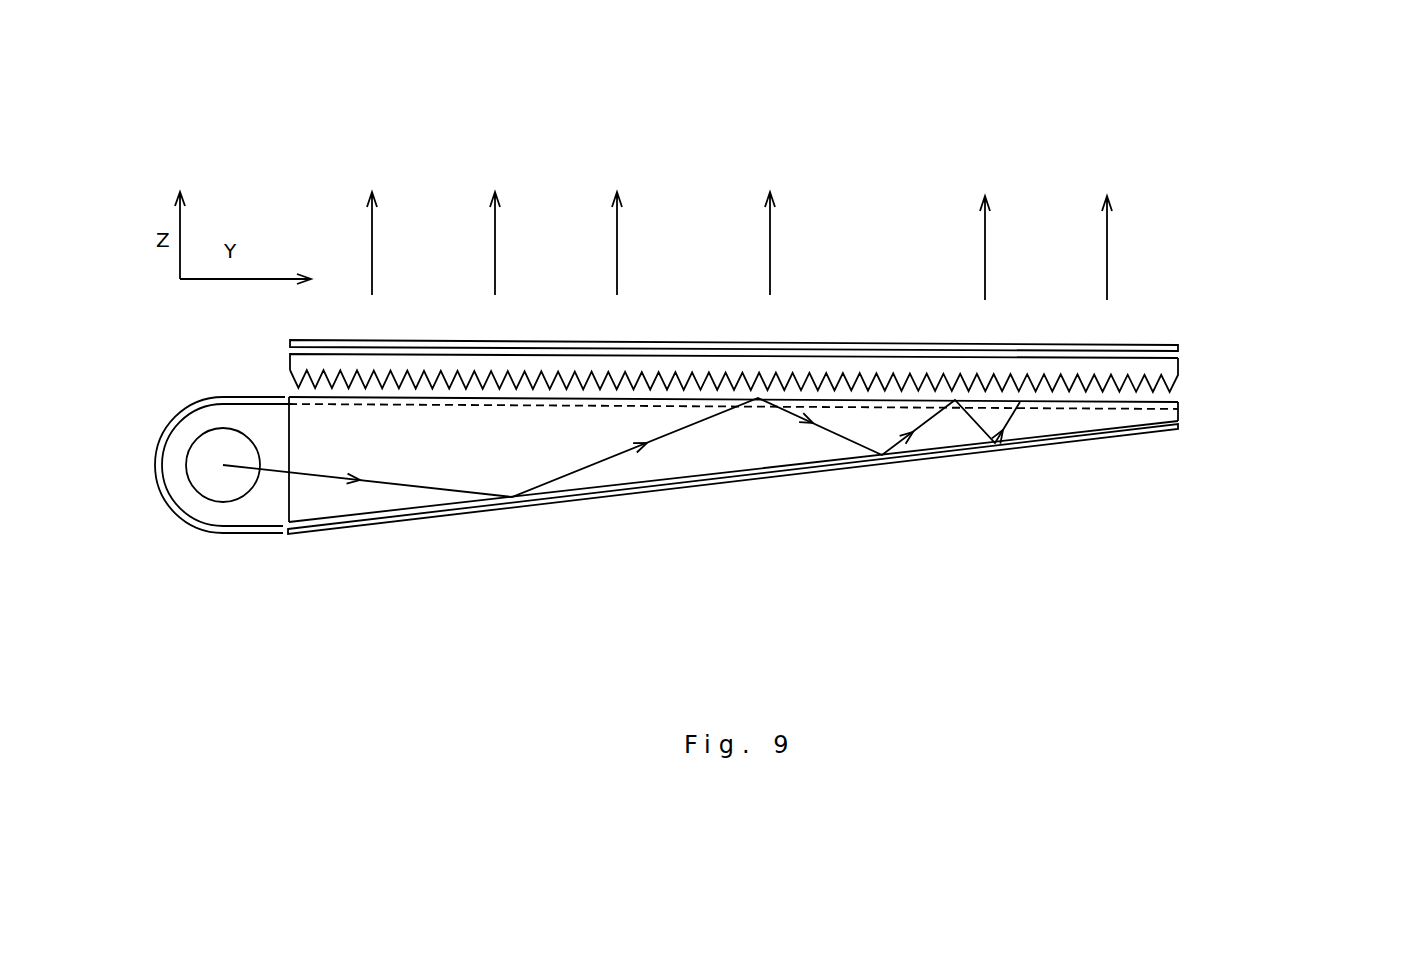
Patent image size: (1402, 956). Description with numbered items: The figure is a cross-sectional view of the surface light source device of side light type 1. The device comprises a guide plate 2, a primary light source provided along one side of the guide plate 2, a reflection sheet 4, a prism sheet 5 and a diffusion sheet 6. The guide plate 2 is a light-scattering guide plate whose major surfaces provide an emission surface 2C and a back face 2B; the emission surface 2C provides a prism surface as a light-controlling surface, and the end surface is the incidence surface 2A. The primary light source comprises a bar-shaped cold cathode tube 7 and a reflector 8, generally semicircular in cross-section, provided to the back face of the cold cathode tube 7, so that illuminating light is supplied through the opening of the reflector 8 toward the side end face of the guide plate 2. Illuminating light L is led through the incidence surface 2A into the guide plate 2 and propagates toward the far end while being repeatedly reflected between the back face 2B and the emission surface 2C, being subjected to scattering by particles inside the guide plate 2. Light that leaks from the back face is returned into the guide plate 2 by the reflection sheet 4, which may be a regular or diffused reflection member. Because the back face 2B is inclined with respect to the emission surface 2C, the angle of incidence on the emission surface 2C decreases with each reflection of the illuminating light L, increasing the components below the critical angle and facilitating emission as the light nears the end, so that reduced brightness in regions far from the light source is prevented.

The surface light source device of side light type 1 is at (872, 174).
The guide plate 2 is at (733, 404).
The incidence surface 2A is at (292, 463).
The back face 2B is at (563, 495).
The emission surface 2C is at (667, 400).
The reflection sheet 4 is at (858, 464).
The prism sheet 5 is at (1179, 387).
The diffusion sheet 6 is at (1179, 348).
The cold cathode tube 7 is at (233, 490).
The reflector 8 is at (168, 508).
The illuminating light L is at (427, 487).